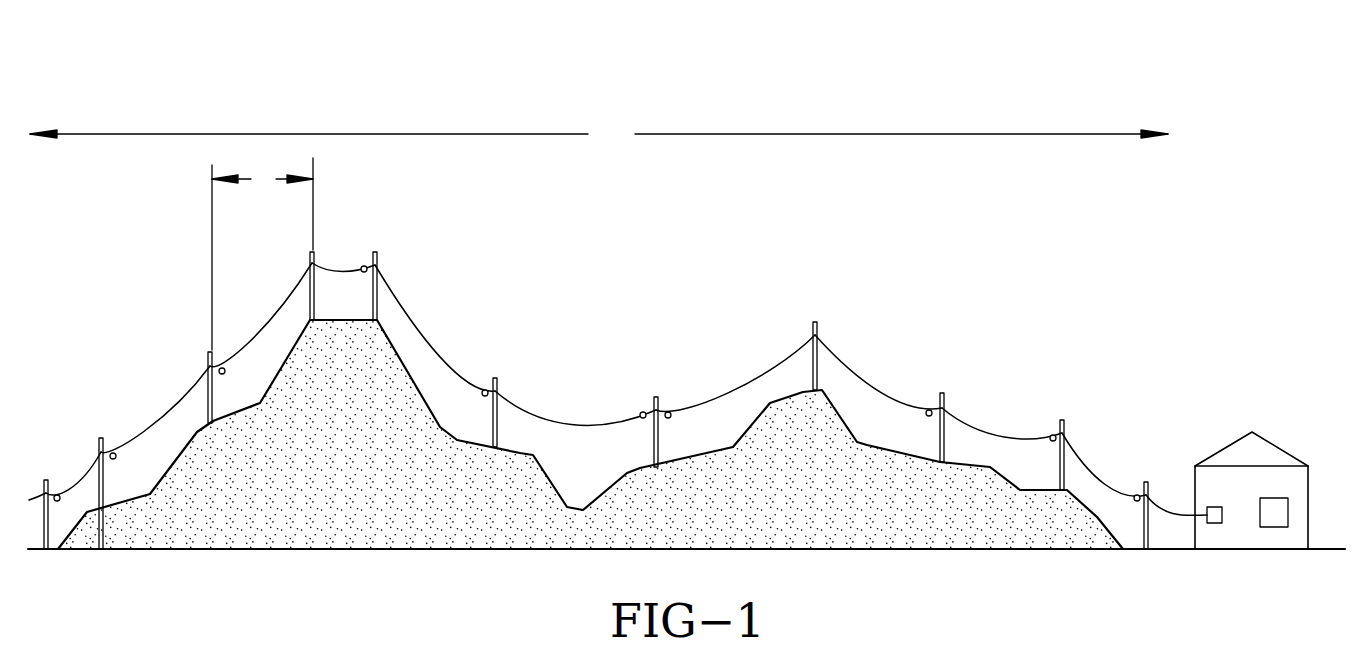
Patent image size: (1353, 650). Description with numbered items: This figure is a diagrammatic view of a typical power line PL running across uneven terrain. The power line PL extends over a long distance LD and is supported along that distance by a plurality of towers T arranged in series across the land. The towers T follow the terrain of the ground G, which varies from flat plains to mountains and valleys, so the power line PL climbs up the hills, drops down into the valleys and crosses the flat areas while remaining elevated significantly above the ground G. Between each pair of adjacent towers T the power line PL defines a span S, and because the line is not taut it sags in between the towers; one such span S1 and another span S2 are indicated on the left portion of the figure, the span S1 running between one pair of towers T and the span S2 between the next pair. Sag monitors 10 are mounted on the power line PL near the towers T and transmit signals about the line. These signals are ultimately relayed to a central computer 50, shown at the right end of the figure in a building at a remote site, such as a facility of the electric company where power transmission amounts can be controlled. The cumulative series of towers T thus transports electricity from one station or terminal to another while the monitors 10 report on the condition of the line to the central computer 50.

The sag monitor 10 is at (57, 495).
The central computer 50 is at (1275, 517).
The tower T is at (101, 438).
The power line PL is at (788, 355).
The ground G is at (618, 483).
The span S is at (262, 254).
The span S1 is at (193, 393).
The span S2 is at (292, 302).
The long distance LD is at (599, 135).